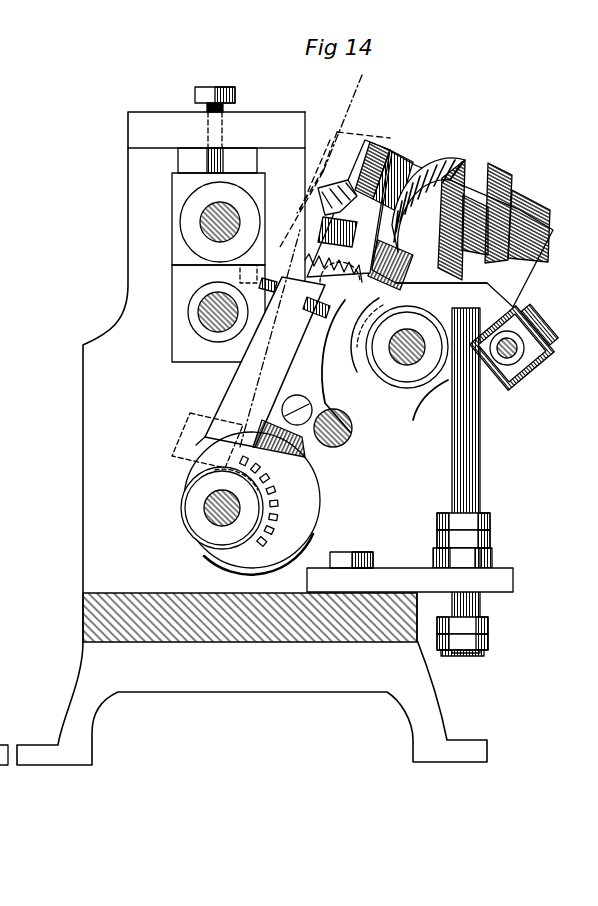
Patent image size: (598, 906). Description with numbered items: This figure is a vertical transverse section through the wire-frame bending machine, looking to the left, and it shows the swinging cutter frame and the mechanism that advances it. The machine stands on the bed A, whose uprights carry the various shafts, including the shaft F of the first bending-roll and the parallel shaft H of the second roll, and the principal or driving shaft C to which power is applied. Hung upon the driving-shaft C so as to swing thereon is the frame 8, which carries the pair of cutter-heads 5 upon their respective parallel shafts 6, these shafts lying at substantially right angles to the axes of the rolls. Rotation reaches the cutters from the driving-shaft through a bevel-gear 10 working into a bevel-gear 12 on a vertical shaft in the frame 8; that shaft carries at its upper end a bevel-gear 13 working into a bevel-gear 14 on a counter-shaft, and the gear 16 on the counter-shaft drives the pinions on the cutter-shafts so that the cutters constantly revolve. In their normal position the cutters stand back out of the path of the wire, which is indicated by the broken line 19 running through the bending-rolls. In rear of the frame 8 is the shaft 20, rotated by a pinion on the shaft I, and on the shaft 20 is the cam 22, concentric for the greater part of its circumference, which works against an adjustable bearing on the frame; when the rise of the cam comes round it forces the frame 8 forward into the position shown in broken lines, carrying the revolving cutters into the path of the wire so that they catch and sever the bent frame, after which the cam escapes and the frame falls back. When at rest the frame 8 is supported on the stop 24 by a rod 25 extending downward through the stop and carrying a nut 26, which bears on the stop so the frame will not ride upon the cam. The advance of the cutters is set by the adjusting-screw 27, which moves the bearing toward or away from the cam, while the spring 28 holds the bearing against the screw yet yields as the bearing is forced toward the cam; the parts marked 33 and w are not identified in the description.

The bed A is at (243, 438).
The shaft H is at (218, 219).
The shaft F is at (218, 313).
The broken line 19 is at (315, 179).
The cutter-heads 5 is at (384, 177).
The bevel-gear 13 is at (334, 213).
The shafts 6 is at (440, 178).
The bevel-gear 14 is at (463, 212).
The gear 16 is at (517, 207).
The swinging frame 8 is at (248, 349).
The bevel-gear 12 is at (192, 444).
The adjusting-screw 27 is at (275, 275).
The spring 28 is at (333, 268).
The block 33 is at (335, 309).
The cam 22 is at (366, 335).
The shaft 20 is at (407, 347).
The shaft I is at (334, 423).
The driving-shaft C is at (250, 503).
The bevel-gear 10 is at (215, 501).
The rod 25 is at (476, 480).
The nut 26 is at (473, 584).
The stop 24 is at (410, 572).
The handwheel w is at (517, 344).